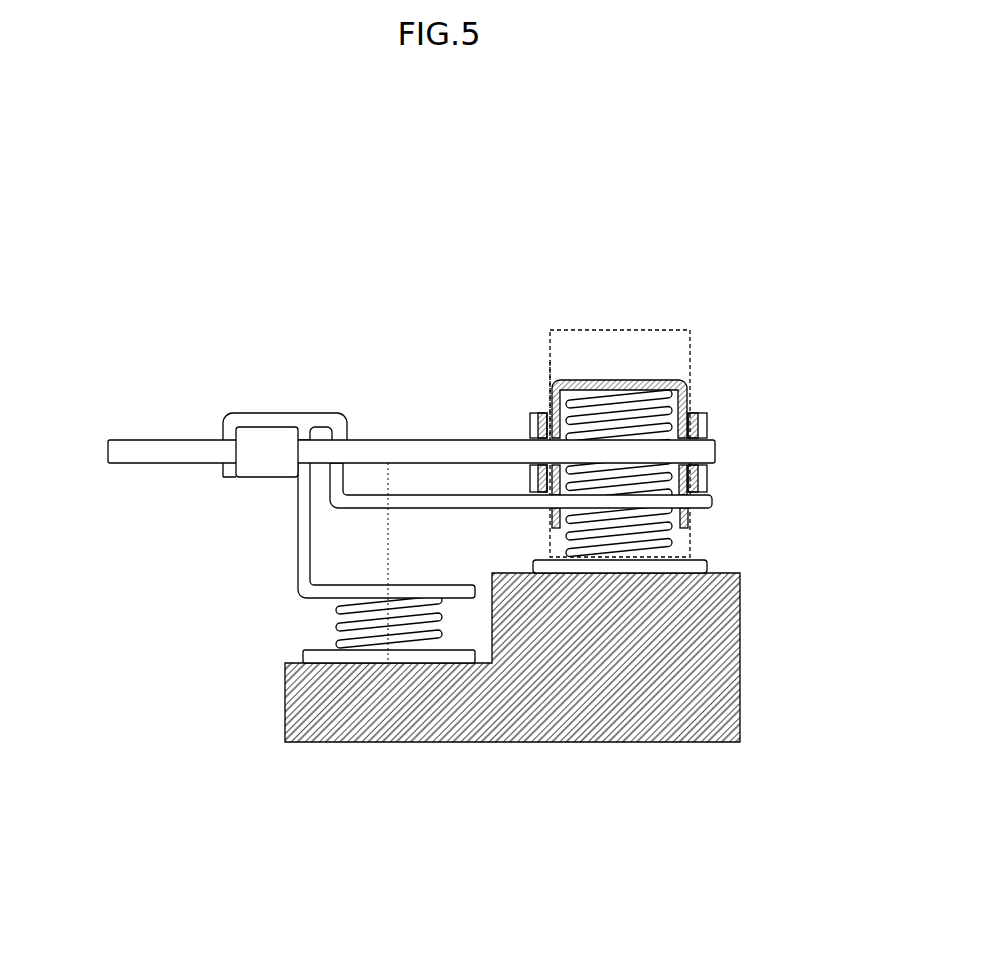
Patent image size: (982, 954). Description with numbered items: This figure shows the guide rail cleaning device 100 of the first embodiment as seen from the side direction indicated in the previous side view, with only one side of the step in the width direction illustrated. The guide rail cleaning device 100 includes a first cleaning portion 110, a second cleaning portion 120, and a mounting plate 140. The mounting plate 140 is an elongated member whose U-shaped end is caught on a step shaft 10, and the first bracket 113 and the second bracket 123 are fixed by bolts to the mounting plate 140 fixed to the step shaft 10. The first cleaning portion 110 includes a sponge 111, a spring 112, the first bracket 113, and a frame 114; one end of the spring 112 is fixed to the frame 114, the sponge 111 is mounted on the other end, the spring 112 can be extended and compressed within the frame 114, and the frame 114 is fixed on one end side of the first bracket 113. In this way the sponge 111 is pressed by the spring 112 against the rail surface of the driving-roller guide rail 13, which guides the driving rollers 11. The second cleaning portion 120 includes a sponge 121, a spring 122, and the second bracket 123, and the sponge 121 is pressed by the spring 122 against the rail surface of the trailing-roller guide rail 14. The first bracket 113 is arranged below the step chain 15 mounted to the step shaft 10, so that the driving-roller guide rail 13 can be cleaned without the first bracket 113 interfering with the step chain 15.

The guide rail cleaning device 100 is at (435, 218).
The first cleaning portion 110 is at (618, 298).
The driving roller 11 is at (548, 362).
The step shaft 10 is at (132, 438).
The driving-roller guide rail 13 is at (650, 575).
The trailing-roller guide rail 14 is at (348, 664).
The step chain 15 is at (710, 425).
The sponge 111 is at (707, 567).
The spring 112 is at (665, 548).
The first bracket 113 is at (445, 495).
The frame 114 is at (655, 382).
The second cleaning portion 120 is at (392, 755).
The sponge 121 is at (303, 657).
The spring 122 is at (340, 622).
The second bracket 123 is at (297, 523).
The mounting plate 140 is at (265, 477).